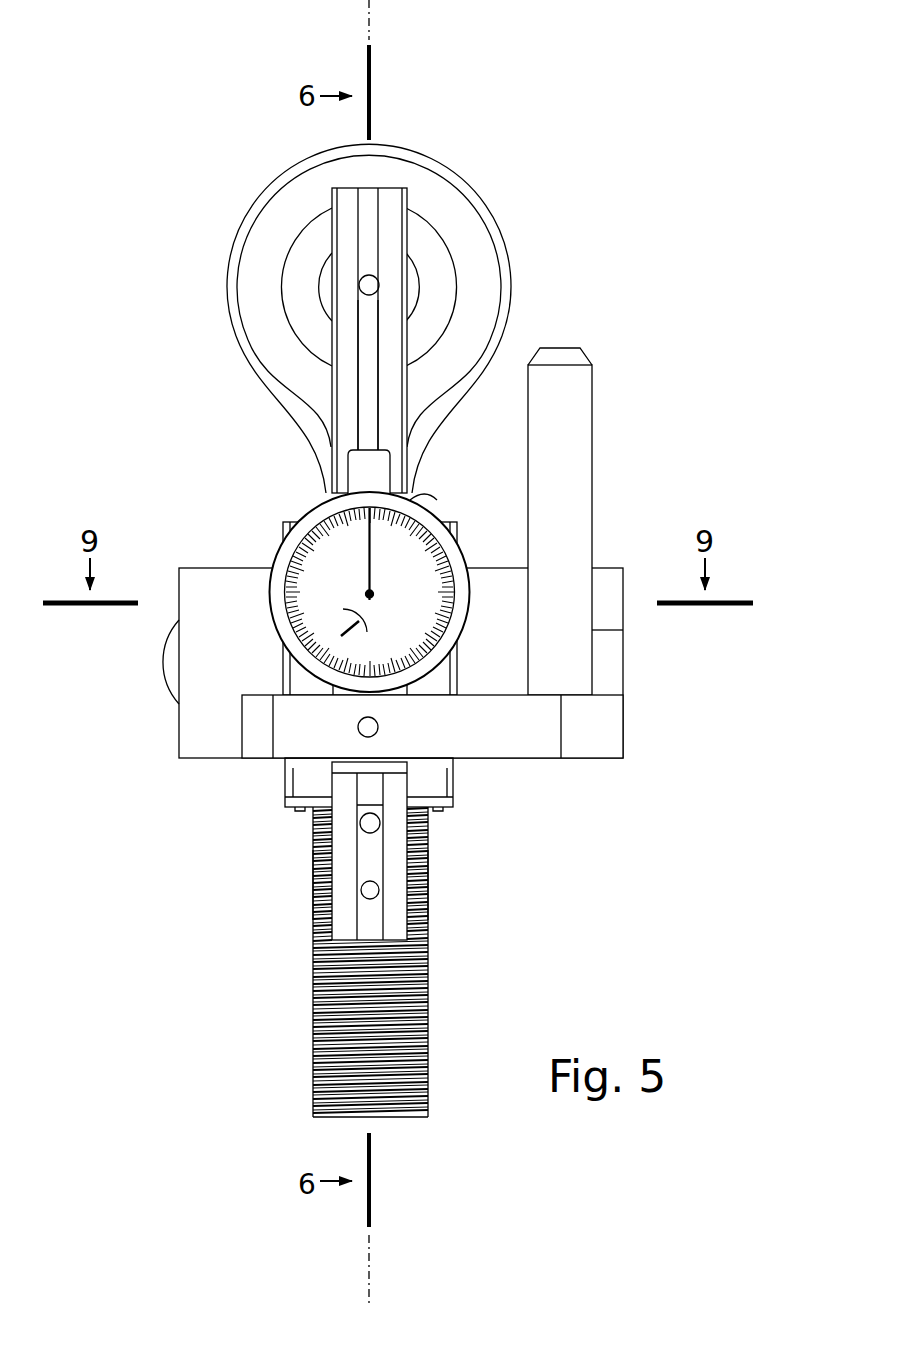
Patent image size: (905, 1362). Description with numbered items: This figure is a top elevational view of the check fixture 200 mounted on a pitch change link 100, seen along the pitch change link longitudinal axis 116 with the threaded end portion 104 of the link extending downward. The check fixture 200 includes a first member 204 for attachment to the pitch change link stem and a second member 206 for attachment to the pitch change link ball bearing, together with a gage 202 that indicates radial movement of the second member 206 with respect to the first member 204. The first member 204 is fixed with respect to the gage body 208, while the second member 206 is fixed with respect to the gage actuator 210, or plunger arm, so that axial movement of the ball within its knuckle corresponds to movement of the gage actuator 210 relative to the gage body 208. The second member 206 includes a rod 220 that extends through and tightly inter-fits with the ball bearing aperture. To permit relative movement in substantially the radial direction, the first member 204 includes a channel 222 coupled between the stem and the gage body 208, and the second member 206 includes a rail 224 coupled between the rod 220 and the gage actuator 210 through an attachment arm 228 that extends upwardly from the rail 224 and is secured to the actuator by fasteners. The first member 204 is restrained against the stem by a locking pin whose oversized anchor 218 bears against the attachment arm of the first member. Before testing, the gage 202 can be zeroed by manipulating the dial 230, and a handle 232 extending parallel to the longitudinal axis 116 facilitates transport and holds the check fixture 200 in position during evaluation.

The pitch change link 100 is at (438, 108).
The threaded end portion 104 is at (330, 1057).
The longitudinal axis 116 is at (371, 17).
The check fixture 200 is at (115, 752).
The gage 202 is at (260, 543).
The first member 204 is at (212, 748).
The second member 206 is at (418, 214).
The gage body 208 is at (310, 238).
The gage actuator 210 is at (265, 337).
The anchor 218 is at (163, 657).
The rod 220 is at (320, 287).
The channel 222 is at (430, 783).
The rail 224 is at (388, 355).
The attachment arm 228 is at (330, 857).
The dial 230 is at (360, 472).
The handle 232 is at (570, 465).